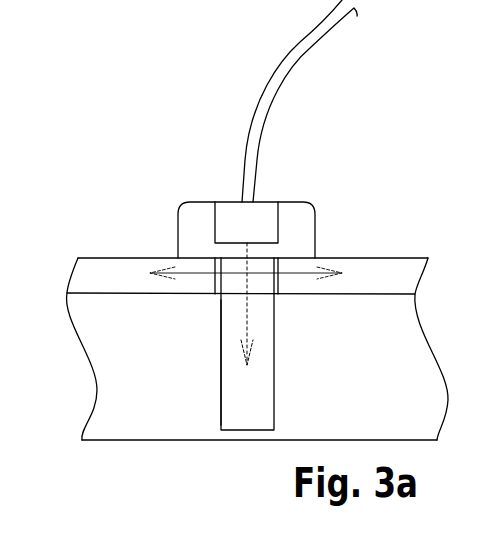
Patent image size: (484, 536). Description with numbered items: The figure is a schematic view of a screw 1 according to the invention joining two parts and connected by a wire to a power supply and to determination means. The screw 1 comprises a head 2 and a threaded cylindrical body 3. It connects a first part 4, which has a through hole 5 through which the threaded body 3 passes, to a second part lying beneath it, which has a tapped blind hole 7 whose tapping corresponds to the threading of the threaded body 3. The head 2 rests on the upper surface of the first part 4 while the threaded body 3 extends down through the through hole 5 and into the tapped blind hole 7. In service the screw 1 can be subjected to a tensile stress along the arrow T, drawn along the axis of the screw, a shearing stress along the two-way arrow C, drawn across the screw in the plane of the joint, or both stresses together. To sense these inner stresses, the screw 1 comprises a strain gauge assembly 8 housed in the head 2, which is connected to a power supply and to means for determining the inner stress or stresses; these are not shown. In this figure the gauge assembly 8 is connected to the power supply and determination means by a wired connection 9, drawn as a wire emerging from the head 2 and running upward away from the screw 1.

The screw 1 is at (268, 296).
The head 2 is at (291, 194).
The threaded cylindrical body 3 is at (211, 355).
The first part 4 is at (380, 273).
The through hole 5 is at (213, 285).
The tapped blind hole 7 is at (218, 392).
The strain gauge assembly 8 is at (230, 212).
The wired connection 9 is at (320, 24).
The two-way arrow C (shearing stress) C is at (293, 275).
The arrow T (tensile stress) T is at (247, 323).